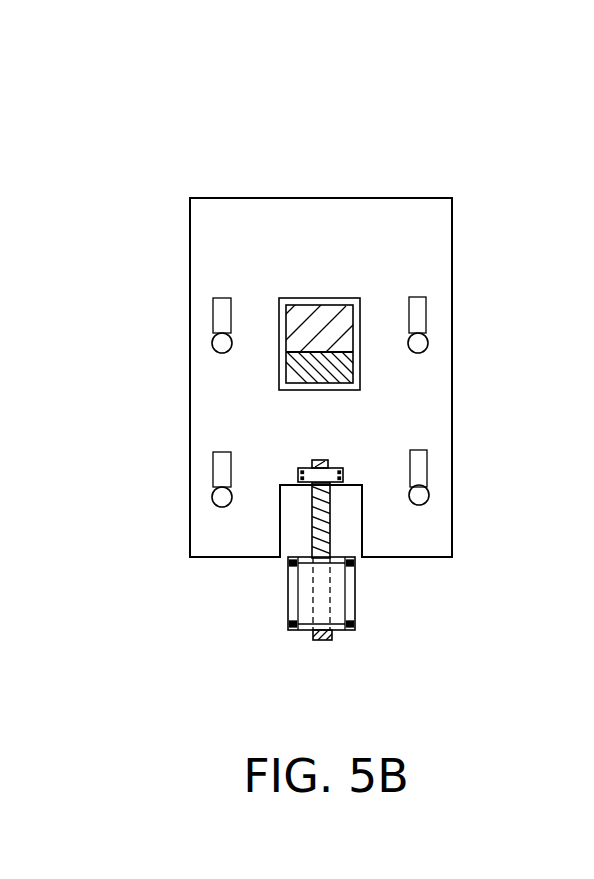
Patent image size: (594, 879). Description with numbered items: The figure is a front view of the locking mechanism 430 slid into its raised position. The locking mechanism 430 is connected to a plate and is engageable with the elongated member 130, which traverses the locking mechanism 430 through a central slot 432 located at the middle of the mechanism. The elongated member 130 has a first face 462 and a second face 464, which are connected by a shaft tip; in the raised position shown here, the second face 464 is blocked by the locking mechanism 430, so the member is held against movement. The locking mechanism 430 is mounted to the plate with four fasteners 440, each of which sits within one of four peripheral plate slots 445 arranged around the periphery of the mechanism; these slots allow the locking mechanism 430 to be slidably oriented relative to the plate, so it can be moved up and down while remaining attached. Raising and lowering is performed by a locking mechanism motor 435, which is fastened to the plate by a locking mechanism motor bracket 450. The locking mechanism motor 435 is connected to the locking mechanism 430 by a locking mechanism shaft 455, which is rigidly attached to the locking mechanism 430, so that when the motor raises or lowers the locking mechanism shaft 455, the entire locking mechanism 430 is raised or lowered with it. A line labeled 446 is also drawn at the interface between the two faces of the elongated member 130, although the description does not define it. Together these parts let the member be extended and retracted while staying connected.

The locking mechanism 430 is at (321, 110).
The central slot 432 is at (295, 298).
The elongated member 130 is at (325, 305).
The second face 464 is at (358, 298).
The first face 462 is at (353, 367).
The interface line 446 is at (290, 340).
The peripheral plate slots 445 is at (213, 305).
The fasteners 440 is at (212, 340).
The locking mechanism shaft 455 is at (330, 640).
The locking mechanism motor 435 is at (305, 630).
The locking mechanism motor bracket 450 is at (288, 595).